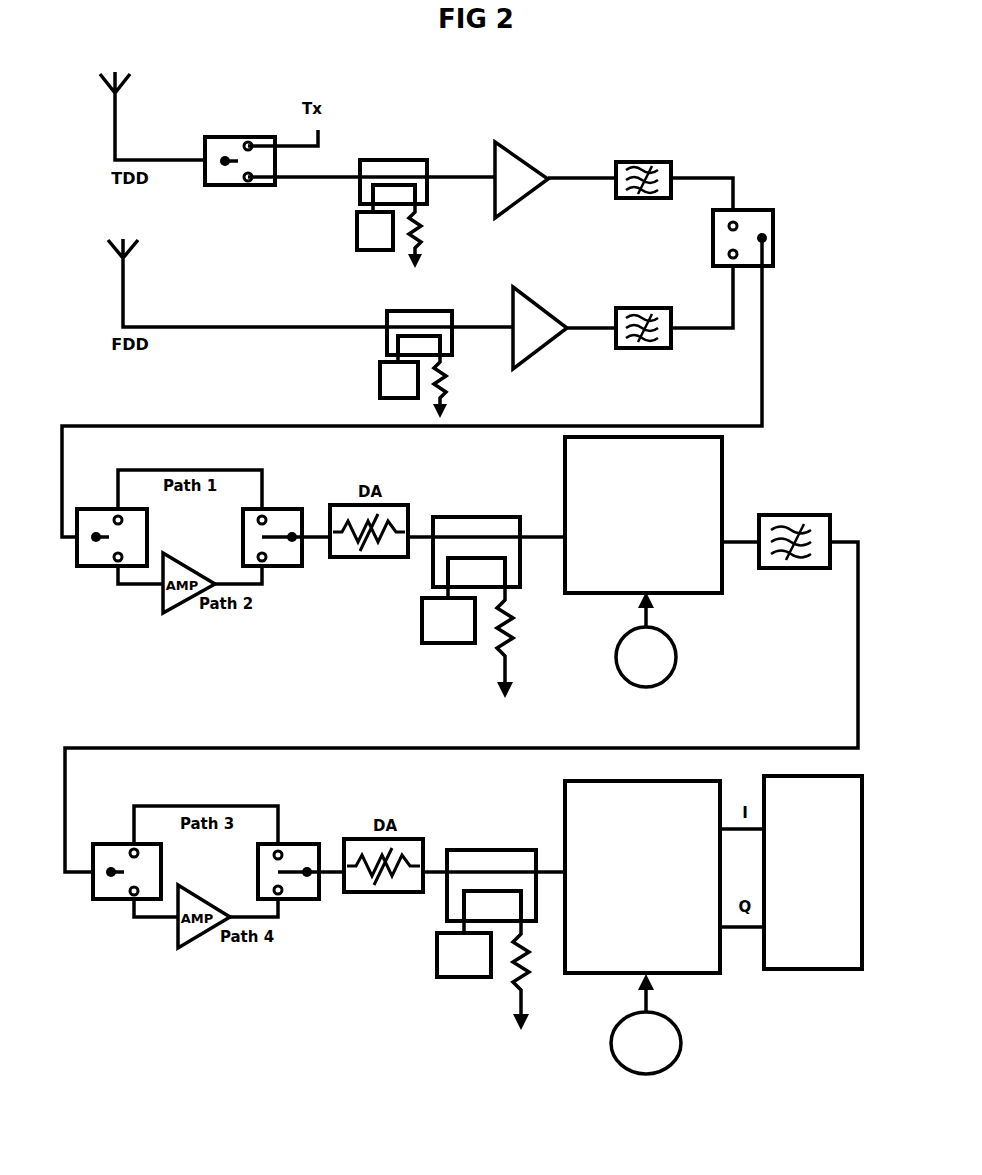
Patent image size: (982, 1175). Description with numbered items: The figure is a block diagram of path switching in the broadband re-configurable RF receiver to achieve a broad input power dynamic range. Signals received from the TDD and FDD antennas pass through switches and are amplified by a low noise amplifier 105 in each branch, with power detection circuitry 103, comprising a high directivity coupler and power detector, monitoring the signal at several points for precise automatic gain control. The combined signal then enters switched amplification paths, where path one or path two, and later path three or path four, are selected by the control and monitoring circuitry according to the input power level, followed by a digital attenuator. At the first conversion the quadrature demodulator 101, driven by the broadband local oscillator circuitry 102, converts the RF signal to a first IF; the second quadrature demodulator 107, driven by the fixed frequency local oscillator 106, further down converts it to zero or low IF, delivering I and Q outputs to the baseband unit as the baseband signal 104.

The quadrature demodulator 101 is at (630, 549).
The broadband local oscillator circuitry 102 is at (706, 733).
The power detection circuitry 103 is at (365, 248).
The baseband signal 104 is at (799, 918).
The low noise amplifier 105 is at (540, 227).
The fixed frequency local oscillator 106 is at (718, 1128).
The second quadrature demodulator 107 is at (630, 913).